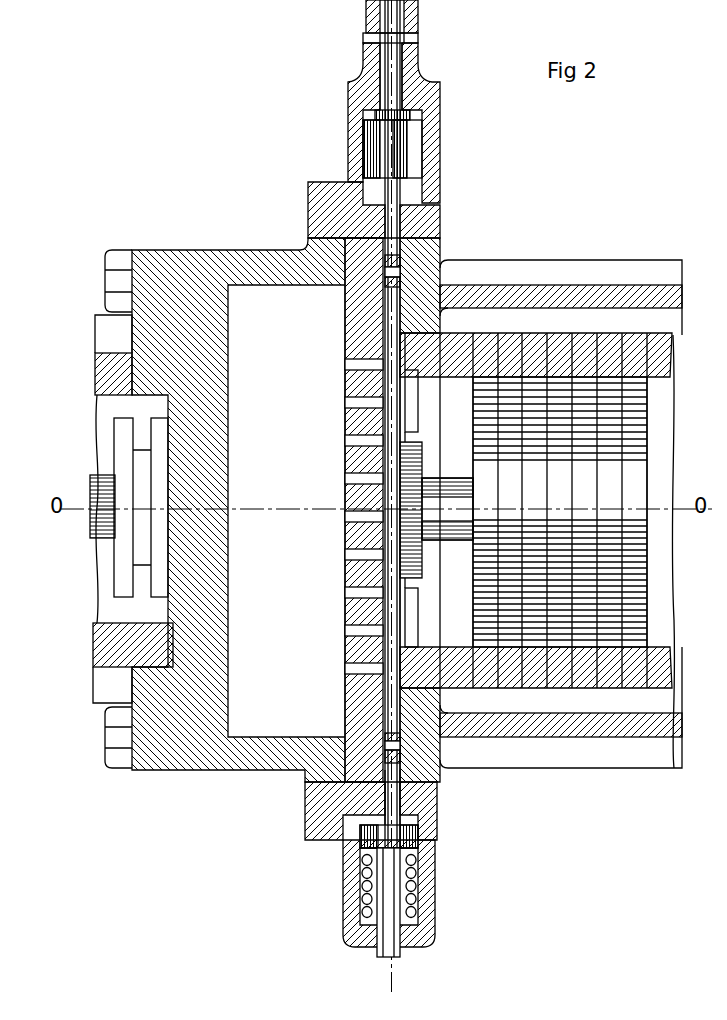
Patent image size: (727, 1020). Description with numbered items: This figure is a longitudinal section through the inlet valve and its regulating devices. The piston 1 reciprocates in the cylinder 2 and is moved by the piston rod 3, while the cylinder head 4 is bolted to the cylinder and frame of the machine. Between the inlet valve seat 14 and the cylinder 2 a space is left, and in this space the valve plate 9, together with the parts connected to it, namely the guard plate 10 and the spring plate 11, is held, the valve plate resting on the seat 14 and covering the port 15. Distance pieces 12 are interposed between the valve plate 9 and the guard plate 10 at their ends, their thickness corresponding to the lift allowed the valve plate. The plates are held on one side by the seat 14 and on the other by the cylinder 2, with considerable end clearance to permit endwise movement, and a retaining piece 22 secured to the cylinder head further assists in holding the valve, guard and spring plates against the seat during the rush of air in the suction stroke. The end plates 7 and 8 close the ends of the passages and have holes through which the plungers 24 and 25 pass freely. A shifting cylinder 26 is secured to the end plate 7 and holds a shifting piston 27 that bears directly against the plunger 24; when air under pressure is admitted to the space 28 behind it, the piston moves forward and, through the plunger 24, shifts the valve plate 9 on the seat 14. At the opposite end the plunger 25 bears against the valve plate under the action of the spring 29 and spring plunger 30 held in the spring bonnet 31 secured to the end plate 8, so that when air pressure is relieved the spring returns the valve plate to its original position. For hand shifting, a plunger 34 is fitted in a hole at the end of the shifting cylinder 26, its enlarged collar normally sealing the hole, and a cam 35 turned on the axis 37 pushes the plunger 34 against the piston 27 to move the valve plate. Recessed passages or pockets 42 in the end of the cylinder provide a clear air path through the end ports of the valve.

The piston 1 is at (640, 412).
The cylinder 2 is at (581, 275).
The piston rod 3 is at (95, 533).
The cylinder head 4 is at (225, 250).
The end plate 7 is at (308, 221).
The end plate 8 is at (437, 814).
The valve plate 9 is at (345, 397).
The guard plate 10 is at (345, 437).
The spring plate 11 is at (352, 476).
The distance pieces 12 is at (150, 328).
The inlet valve seat 14 is at (345, 329).
The port 15 is at (352, 361).
The retaining piece 22 is at (415, 461).
The plunger 24 is at (392, 194).
The plunger 25 is at (395, 776).
The shifting cylinder 26 is at (441, 94).
The shifting piston 27 is at (370, 140).
The space 28 is at (423, 120).
The spring 29 is at (437, 921).
The spring plunger 30 is at (408, 838).
The spring bonnet 31 is at (428, 877).
The plunger 34 is at (380, 80).
The cam 35 is at (419, 23).
The axis 37 is at (366, 36).
The passages or pockets 42 is at (412, 423).